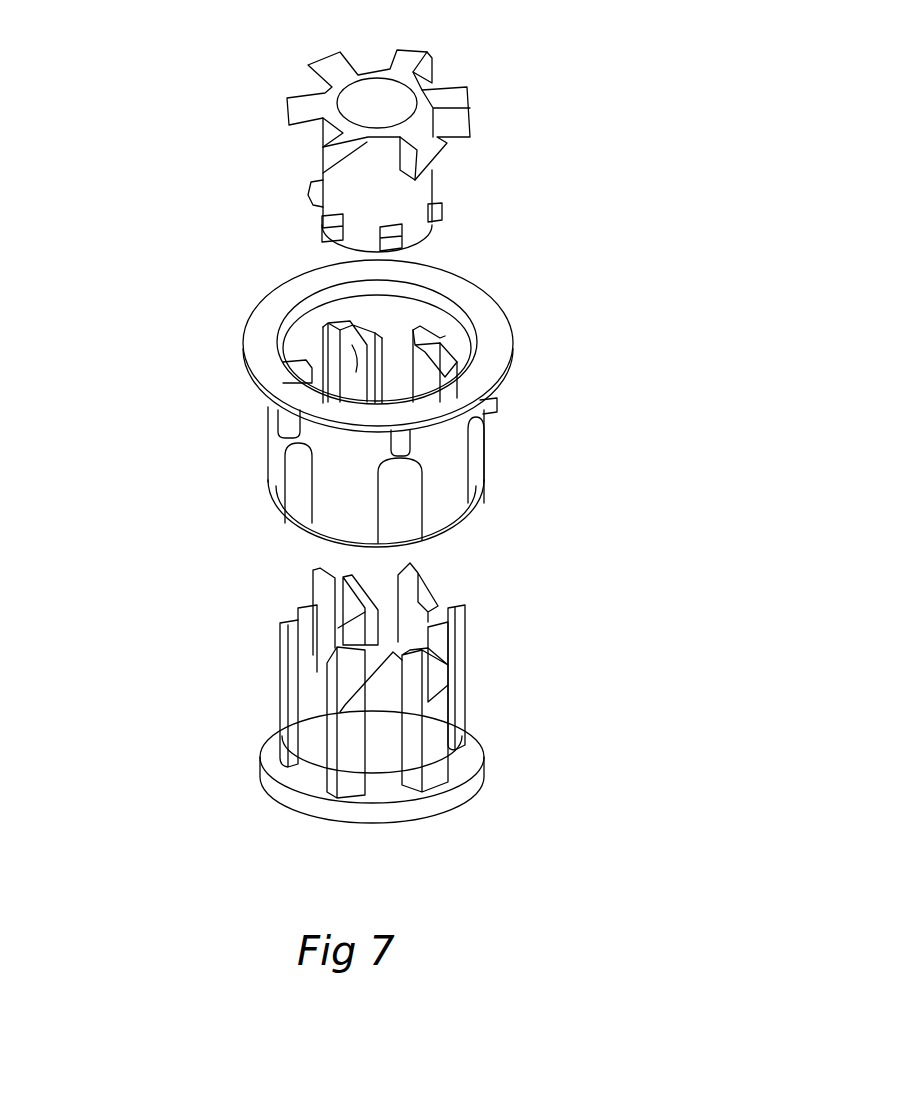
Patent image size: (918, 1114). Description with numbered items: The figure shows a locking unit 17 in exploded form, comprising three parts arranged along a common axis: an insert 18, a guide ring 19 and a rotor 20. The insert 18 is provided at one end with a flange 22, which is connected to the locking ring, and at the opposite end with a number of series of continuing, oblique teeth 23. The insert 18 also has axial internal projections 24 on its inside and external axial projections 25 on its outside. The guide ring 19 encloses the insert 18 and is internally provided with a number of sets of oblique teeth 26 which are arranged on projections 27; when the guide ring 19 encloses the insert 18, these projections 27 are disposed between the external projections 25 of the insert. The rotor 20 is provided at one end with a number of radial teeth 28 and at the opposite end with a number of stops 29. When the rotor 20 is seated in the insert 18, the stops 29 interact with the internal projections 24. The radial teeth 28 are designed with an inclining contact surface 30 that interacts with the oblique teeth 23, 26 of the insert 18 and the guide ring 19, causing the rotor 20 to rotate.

The locking unit 17 is at (595, 400).
The insert 18 is at (221, 753).
The guide ring 19 is at (203, 450).
The rotor 20 is at (216, 160).
The flange 22 is at (445, 803).
The oblique teeth 23 is at (455, 607).
The axial internal projections 24 is at (338, 587).
The external axial projections 25 is at (344, 777).
The oblique teeth 26 is at (440, 338).
The projections 27 is at (325, 326).
The radial teeth 28 is at (464, 97).
The stops 29 is at (436, 210).
The inclining contact surface 30 is at (433, 163).